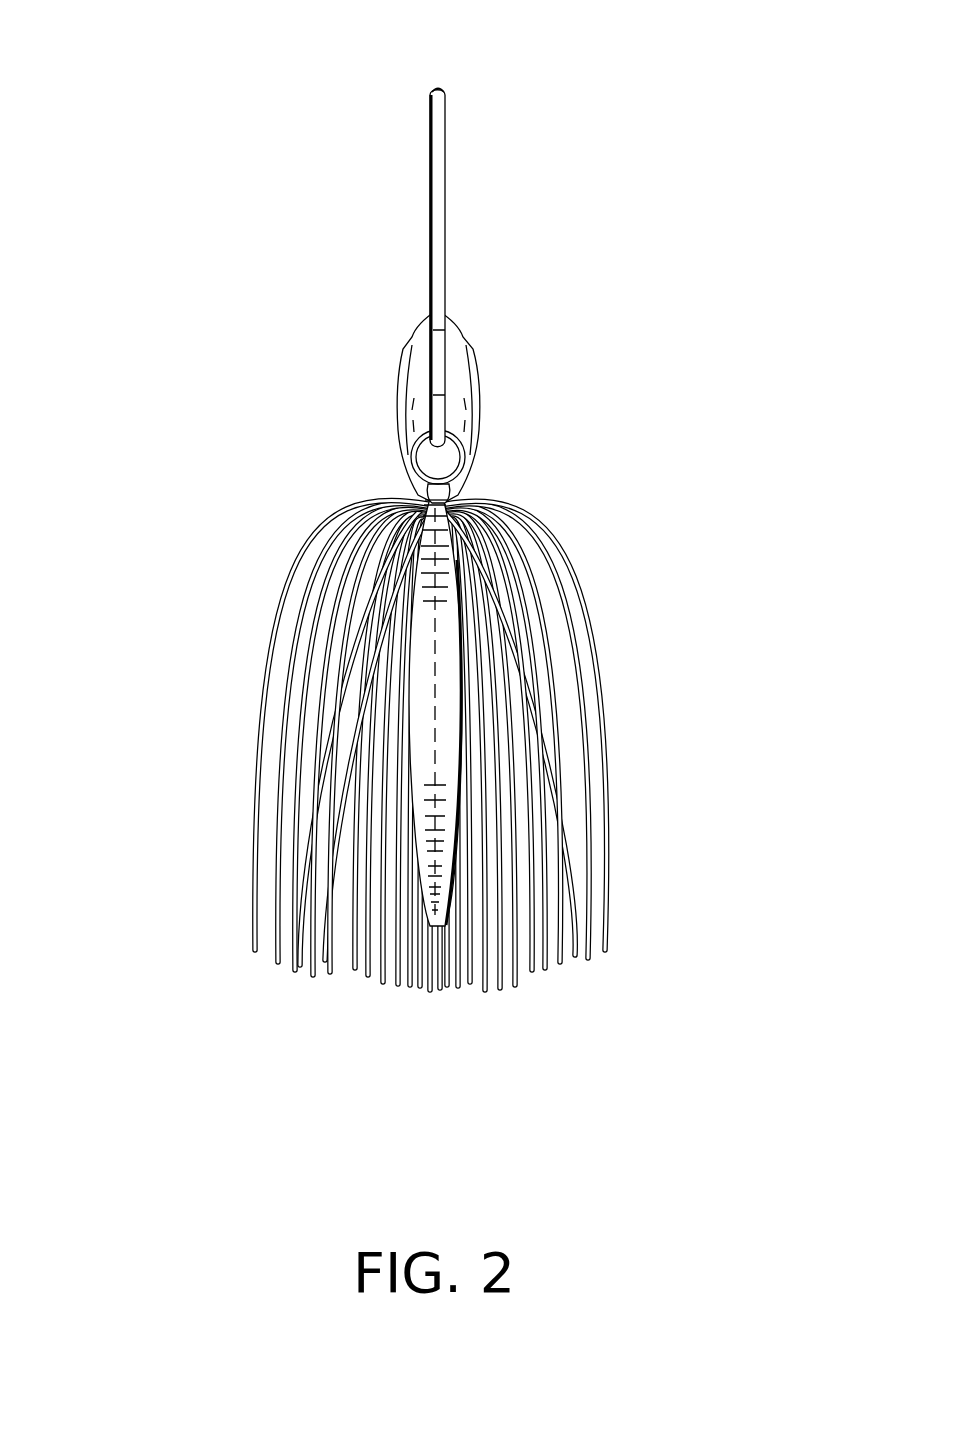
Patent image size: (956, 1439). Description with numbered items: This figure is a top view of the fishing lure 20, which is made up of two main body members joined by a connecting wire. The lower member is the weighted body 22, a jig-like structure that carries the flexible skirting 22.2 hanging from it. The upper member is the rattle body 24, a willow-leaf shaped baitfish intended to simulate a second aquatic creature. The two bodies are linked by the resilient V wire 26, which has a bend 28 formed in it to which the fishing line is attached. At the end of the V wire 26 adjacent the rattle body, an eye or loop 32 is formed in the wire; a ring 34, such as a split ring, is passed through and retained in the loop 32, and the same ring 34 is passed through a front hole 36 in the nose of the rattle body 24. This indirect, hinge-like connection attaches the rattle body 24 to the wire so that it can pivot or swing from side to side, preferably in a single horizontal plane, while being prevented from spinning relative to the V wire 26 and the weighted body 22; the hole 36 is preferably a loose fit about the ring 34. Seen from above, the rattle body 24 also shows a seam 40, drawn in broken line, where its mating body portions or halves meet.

The lure 20 is at (242, 210).
The weighted body 22 is at (418, 340).
The flexible skirting 22.2 is at (560, 925).
The upper rattle body 24 is at (425, 655).
The V wire 26 is at (447, 232).
The bend 28 is at (446, 115).
The eye or loop 32 is at (443, 417).
The ring 34 is at (400, 445).
The front hole 36 is at (468, 490).
The seam 40 is at (435, 757).